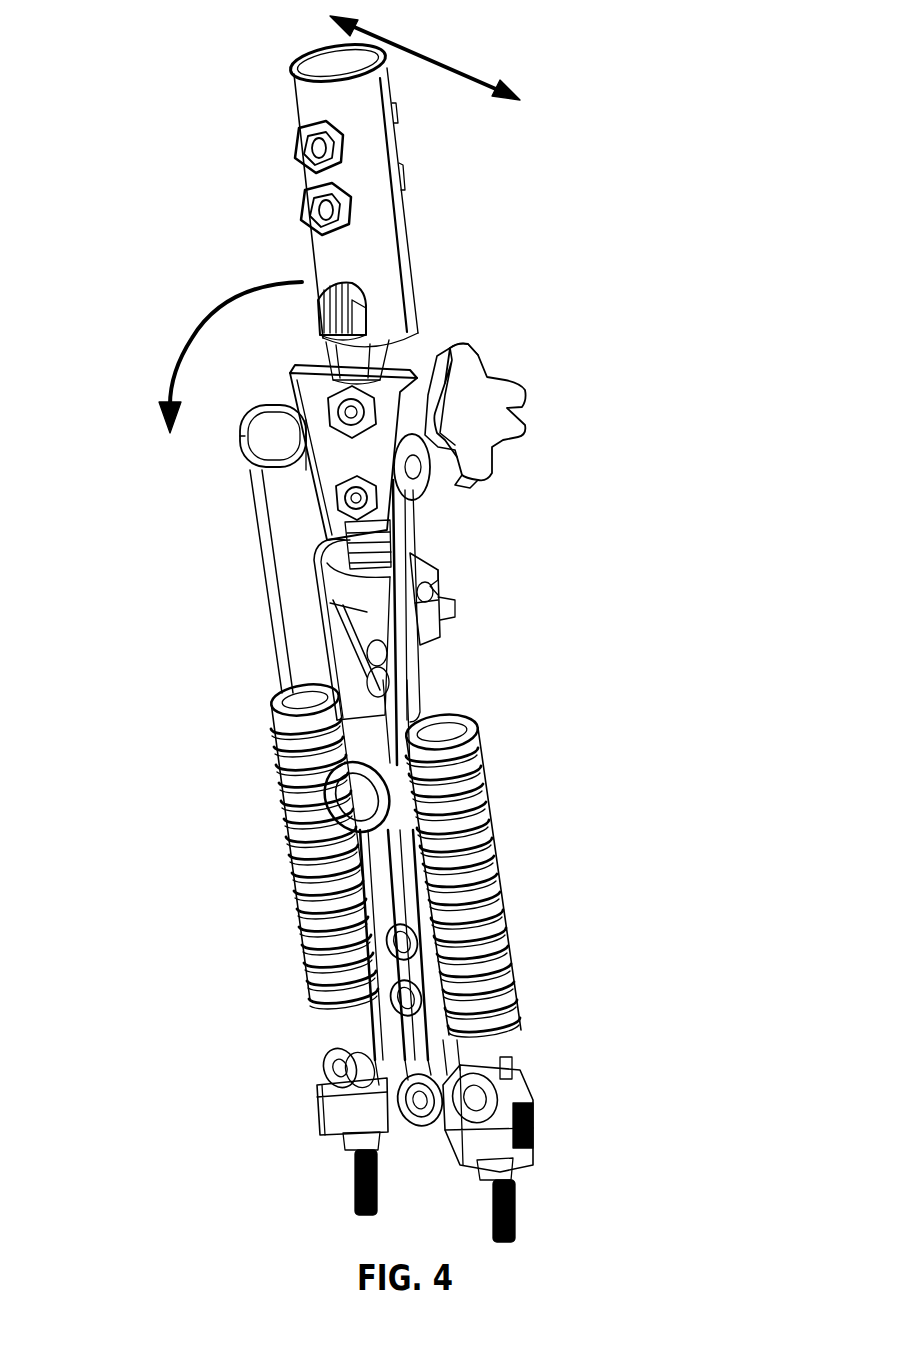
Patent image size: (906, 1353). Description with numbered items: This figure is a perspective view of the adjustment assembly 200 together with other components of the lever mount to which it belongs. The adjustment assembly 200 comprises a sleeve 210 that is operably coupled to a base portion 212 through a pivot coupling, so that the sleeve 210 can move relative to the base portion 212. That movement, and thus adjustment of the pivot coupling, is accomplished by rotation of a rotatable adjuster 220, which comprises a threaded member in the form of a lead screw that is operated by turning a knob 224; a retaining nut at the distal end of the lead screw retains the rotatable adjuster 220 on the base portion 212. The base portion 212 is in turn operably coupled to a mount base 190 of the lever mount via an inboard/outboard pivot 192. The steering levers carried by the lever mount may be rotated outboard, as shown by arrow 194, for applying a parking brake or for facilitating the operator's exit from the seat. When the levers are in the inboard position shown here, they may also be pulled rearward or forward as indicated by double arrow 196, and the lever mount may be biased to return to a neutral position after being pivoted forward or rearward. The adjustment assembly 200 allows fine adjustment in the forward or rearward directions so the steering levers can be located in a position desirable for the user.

The mount base 190 is at (387, 867).
The inboard/outboard pivot 192 is at (428, 582).
The arrow 194 is at (190, 338).
The double arrow 196 is at (468, 74).
The adjustment assembly 200 is at (512, 270).
The sleeve 210 is at (308, 110).
The base portion 212 is at (337, 452).
The rotatable adjuster 220 is at (485, 425).
The knob 224 is at (490, 393).